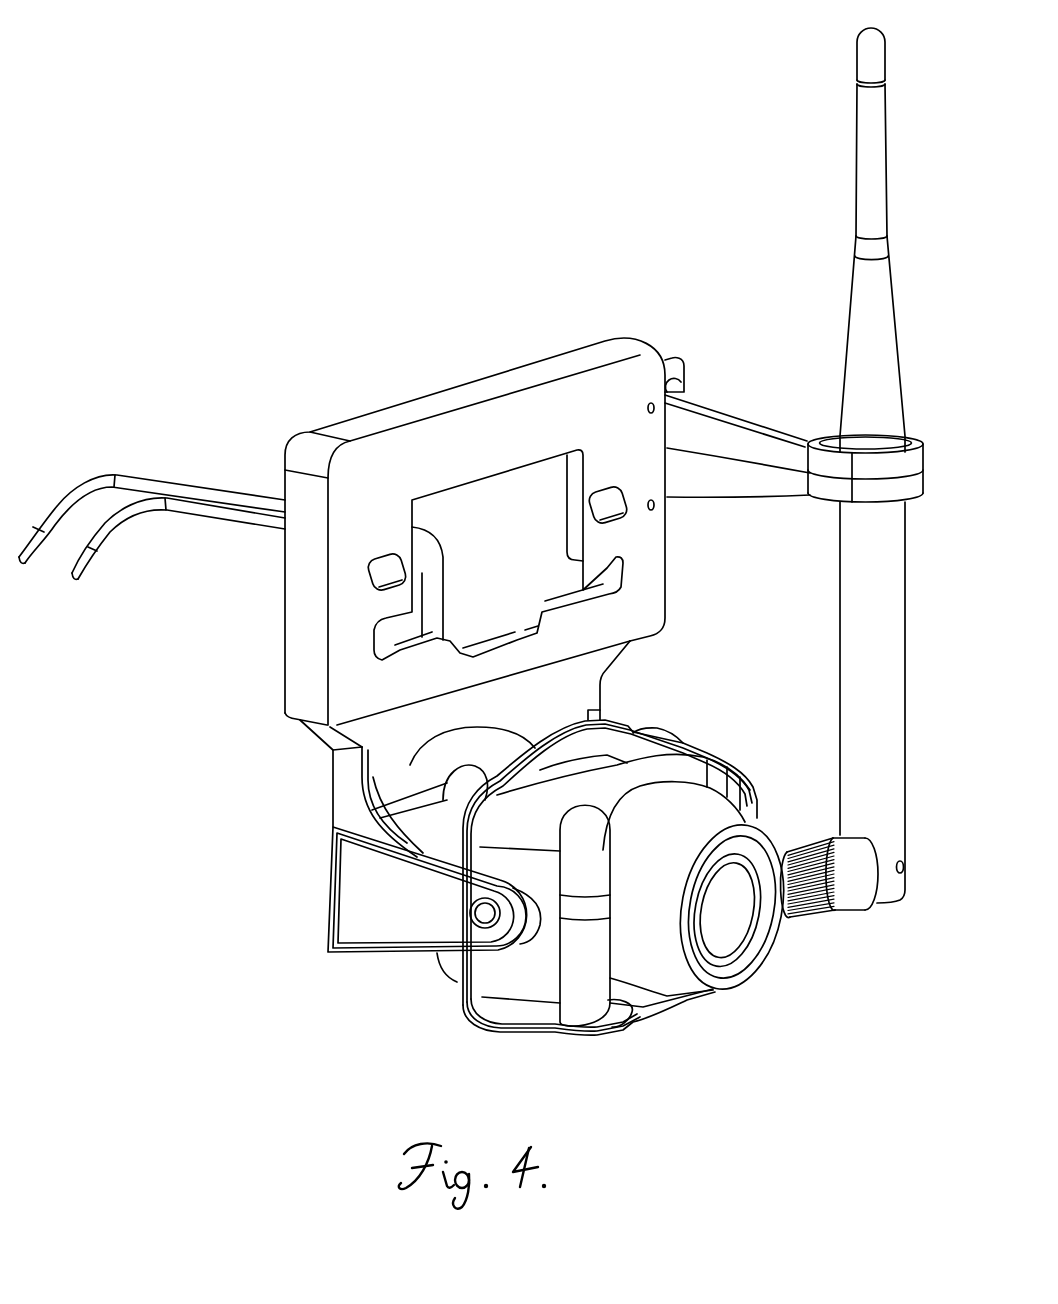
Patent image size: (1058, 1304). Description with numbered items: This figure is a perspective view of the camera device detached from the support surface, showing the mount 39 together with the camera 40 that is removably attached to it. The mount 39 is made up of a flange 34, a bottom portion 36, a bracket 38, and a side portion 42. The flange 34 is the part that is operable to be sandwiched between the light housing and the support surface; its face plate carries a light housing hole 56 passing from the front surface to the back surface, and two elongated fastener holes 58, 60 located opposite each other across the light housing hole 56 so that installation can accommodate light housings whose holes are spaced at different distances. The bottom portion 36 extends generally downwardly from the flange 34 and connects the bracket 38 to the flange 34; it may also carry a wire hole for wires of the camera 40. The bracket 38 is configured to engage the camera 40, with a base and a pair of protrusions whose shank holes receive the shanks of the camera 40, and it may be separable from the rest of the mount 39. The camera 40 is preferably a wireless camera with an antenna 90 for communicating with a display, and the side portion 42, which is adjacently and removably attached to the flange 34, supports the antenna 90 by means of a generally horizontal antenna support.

The flange 34 is at (486, 493).
The bottom portion 36 is at (347, 782).
The bracket 38 is at (337, 897).
The mount 39 is at (565, 622).
The camera 40 is at (685, 1020).
The side portion 42 is at (722, 413).
The light housing hole 56 is at (500, 497).
The fastener hole 58 is at (378, 569).
The fastener hole 60 is at (610, 510).
The antenna 90 is at (862, 290).